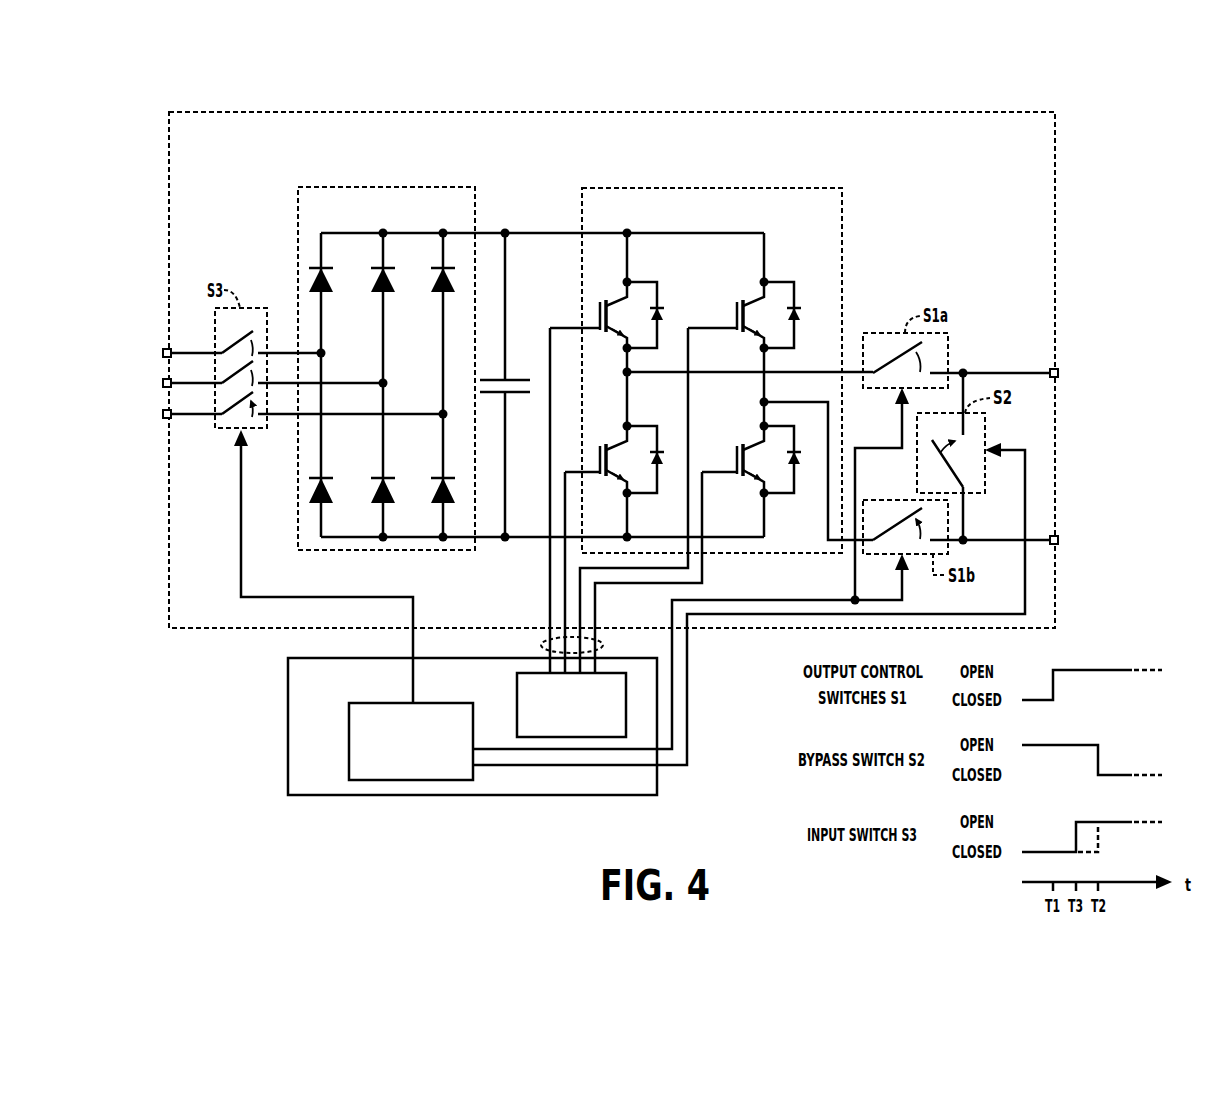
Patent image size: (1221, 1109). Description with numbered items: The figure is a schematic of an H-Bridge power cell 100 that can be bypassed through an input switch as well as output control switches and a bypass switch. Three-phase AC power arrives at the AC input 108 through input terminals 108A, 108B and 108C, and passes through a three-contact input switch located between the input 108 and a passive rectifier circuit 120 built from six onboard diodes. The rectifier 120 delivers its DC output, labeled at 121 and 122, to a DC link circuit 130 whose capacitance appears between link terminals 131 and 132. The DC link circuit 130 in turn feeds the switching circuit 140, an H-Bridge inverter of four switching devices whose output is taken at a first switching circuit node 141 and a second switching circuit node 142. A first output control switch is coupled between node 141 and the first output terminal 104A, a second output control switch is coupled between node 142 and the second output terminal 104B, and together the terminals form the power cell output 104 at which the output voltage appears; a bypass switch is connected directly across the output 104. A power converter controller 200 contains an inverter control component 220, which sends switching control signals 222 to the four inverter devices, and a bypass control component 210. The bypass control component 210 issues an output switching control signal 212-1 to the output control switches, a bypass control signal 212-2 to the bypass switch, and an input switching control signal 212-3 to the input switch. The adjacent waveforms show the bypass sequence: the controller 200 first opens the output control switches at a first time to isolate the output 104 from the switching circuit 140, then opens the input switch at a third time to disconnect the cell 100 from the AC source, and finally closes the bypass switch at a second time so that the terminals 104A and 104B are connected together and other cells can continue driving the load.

The power cell 100 is at (612, 112).
The power cell output 104 is at (1080, 332).
The first output terminal 104A is at (1058, 373).
The second output terminal 104B is at (1058, 540).
The AC input 108 is at (150, 320).
The input terminal 108A is at (163, 353).
The input terminal 108B is at (163, 383).
The input terminal 108C is at (163, 414).
The rectifier circuit 120 is at (380, 187).
The rectifier positive output node 121 is at (336, 233).
The rectifier negative output node 122 is at (368, 537).
The DC link circuit 130 is at (552, 164).
The DC link terminal 131 is at (515, 233).
The DC link terminal 132 is at (515, 537).
The switching circuit 140 is at (706, 188).
The first switching circuit node 141 is at (642, 372).
The second switching circuit node 142 is at (780, 402).
The power converter controller 200 is at (343, 658).
The bypass control component 210 is at (349, 735).
The output switching control signal 212-1 is at (794, 600).
The bypass control signal 212-2 is at (778, 614).
The input switching control signal 212-3 is at (242, 576).
The inverter control component 220 is at (517, 707).
The switching control signals 222 is at (541, 644).